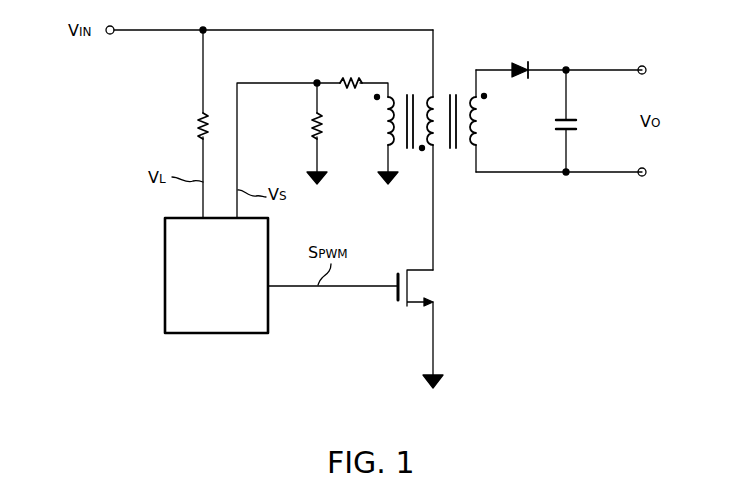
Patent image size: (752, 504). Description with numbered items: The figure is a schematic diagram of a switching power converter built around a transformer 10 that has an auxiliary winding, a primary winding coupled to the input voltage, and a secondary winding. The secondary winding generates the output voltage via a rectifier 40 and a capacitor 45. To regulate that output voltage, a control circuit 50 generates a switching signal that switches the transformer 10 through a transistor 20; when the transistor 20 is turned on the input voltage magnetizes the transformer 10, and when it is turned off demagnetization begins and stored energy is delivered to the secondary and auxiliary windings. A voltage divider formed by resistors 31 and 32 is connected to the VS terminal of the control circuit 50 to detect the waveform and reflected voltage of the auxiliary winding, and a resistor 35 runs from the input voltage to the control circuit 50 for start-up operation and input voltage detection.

The transformer 10 is at (448, 90).
The transistor 20 is at (430, 329).
The resistor 31 is at (351, 72).
The resistor 32 is at (302, 133).
The resistor 35 is at (187, 126).
The rectifier 40 is at (519, 59).
The capacitor 45 is at (580, 121).
The control circuit 50 is at (165, 338).